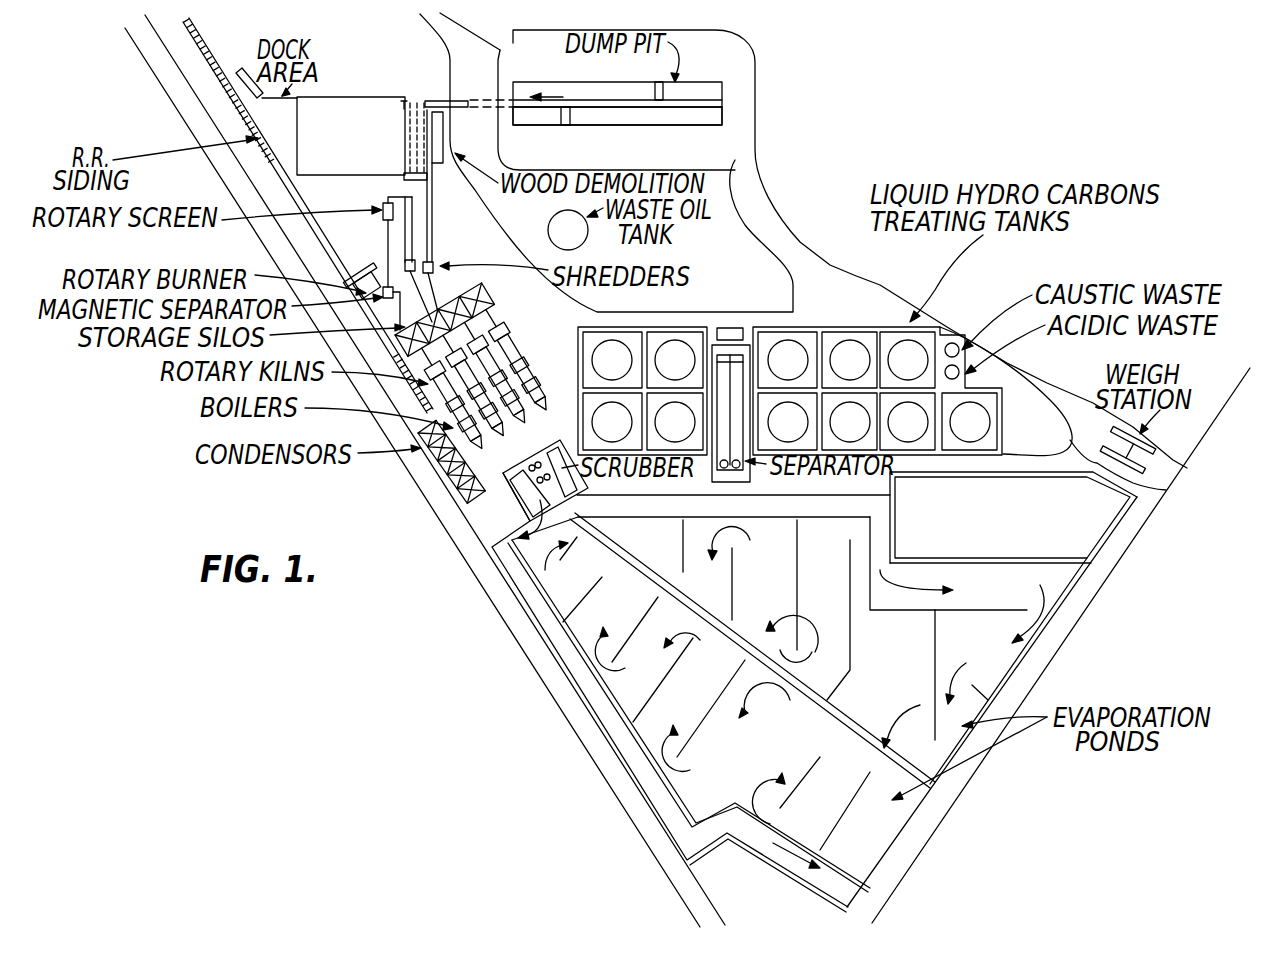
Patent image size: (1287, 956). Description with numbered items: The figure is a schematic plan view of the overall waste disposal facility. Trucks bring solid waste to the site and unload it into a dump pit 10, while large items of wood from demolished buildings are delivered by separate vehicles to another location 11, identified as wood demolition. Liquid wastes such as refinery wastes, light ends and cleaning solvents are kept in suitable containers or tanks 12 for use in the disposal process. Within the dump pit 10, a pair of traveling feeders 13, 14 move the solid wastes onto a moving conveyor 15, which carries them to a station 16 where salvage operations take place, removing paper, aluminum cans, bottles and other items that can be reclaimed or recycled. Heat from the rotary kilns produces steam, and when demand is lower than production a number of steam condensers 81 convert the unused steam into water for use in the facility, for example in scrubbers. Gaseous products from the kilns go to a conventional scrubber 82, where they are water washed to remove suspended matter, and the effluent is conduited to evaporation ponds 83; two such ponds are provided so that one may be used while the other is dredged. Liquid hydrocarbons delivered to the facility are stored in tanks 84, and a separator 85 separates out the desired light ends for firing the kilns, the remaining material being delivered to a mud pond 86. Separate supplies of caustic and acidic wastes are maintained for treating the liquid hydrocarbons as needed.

The dump pit 10 is at (655, 104).
The wood demolition location 11 is at (437, 165).
The tanks 12 is at (548, 222).
The traveling feeder 13 is at (650, 90).
The traveling feeder 14 is at (562, 110).
The moving conveyor 15 is at (617, 106).
The salvage operations station 16 is at (364, 92).
The steam condensers 81 is at (457, 483).
The scrubber 82 is at (552, 498).
The evaporation ponds 83 is at (690, 800).
The tanks 84 is at (850, 345).
The separator 85 is at (748, 474).
The mud pond 86 is at (1100, 518).